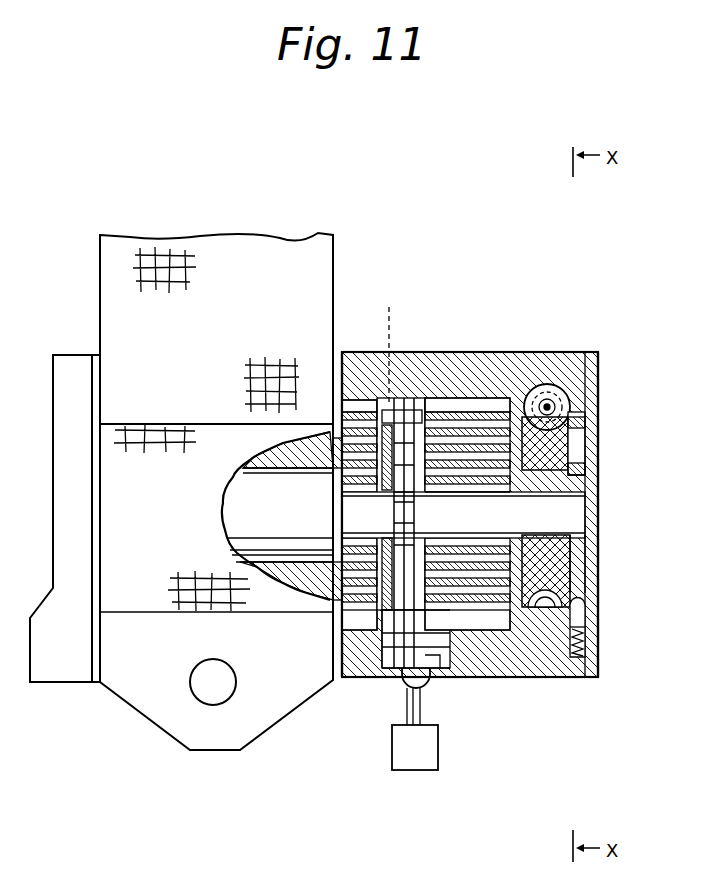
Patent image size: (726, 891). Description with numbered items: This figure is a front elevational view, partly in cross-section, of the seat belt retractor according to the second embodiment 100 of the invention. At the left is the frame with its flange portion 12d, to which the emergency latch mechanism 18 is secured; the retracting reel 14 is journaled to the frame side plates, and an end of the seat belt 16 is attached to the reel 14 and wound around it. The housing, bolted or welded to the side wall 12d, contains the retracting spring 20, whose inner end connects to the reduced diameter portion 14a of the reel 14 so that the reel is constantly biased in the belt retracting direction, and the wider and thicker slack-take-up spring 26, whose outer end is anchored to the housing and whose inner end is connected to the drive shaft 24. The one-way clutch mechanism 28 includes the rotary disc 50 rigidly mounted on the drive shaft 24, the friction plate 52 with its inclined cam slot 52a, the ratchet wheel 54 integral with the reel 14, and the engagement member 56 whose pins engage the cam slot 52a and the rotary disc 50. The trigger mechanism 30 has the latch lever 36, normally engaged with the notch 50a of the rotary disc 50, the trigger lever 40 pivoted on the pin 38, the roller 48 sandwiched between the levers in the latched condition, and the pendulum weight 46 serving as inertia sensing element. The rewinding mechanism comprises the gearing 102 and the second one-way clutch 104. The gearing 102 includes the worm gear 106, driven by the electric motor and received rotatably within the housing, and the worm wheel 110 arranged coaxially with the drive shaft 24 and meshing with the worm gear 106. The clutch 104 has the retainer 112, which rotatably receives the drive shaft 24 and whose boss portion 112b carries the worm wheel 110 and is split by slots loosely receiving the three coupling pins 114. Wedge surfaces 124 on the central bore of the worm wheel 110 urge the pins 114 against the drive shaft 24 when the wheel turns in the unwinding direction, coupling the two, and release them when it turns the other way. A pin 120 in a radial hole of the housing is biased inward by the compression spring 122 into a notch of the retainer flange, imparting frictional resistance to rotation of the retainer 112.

The second embodiment 100 is at (273, 211).
The seat belt 16 is at (100, 300).
The retracting reel 14 is at (273, 545).
The reduced diameter portion 14a is at (357, 513).
The flange portion 12d is at (333, 650).
The emergency latch mechanism 18 is at (68, 673).
The retracting spring 20 is at (355, 358).
The slack-take-up spring 26 is at (500, 640).
The friction plate 52 is at (373, 365).
The cam slot 52a is at (390, 345).
The engagement member 56 is at (406, 395).
The one-way clutch mechanism 28 is at (419, 360).
The ratchet wheel 54 is at (443, 357).
The rotary disc 50 is at (457, 437).
The notch 50a is at (457, 502).
The latch lever 36 is at (412, 512).
The drive shaft 24 is at (572, 497).
The gearing 102 is at (547, 378).
The second one-way clutch 104 is at (594, 444).
The worm gear 106 is at (572, 353).
The worm wheel 110 is at (590, 392).
The retainer 112 is at (578, 572).
The boss portion 112b is at (578, 556).
The coupling pins 114 is at (573, 480).
The wedge surfaces 124 is at (575, 517).
The pin 120 is at (578, 615).
The compression spring 122 is at (584, 650).
The pin 38 is at (345, 680).
The trigger mechanism 30 is at (378, 652).
The trigger lever 40 is at (440, 680).
The pendulum weight 46 is at (430, 755).
The roller 48 is at (453, 660).